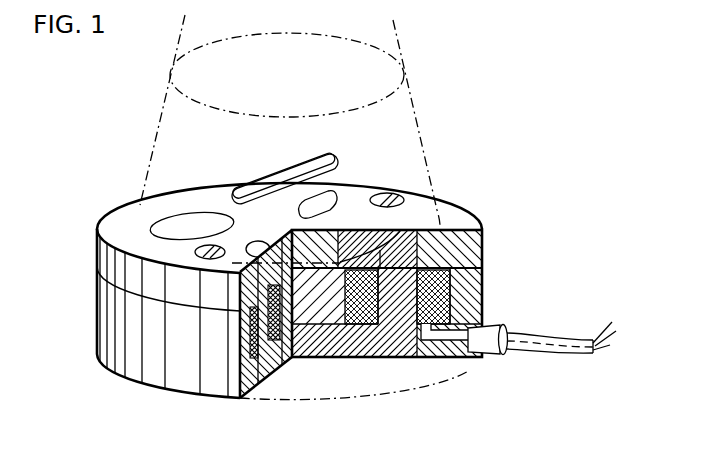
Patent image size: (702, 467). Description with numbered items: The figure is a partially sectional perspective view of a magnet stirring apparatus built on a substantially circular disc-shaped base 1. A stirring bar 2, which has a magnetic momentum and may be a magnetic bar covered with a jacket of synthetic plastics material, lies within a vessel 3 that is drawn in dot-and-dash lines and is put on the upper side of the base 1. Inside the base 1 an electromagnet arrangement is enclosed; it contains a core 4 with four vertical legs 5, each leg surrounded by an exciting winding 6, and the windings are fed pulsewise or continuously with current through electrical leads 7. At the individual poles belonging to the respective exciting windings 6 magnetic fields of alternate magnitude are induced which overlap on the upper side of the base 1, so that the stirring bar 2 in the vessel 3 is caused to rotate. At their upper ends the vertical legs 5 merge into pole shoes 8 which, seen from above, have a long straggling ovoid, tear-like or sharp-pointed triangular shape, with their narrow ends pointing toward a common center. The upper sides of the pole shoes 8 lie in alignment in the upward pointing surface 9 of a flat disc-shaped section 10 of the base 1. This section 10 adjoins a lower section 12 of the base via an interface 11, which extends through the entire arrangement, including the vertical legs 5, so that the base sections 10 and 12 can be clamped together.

The base 1 is at (498, 266).
The stirring bar 2 is at (290, 180).
The vessel 3 is at (426, 128).
The core 4 is at (362, 362).
The vertical legs 5 is at (393, 334).
The exciting windings 6 is at (450, 300).
The electrical leads 7 is at (560, 348).
The pole shoes 8 is at (400, 231).
The upward pointing surface 9 is at (123, 222).
The flat disc-shaped section 10 is at (107, 257).
The interface 11 is at (103, 290).
The lower section 12 is at (112, 338).